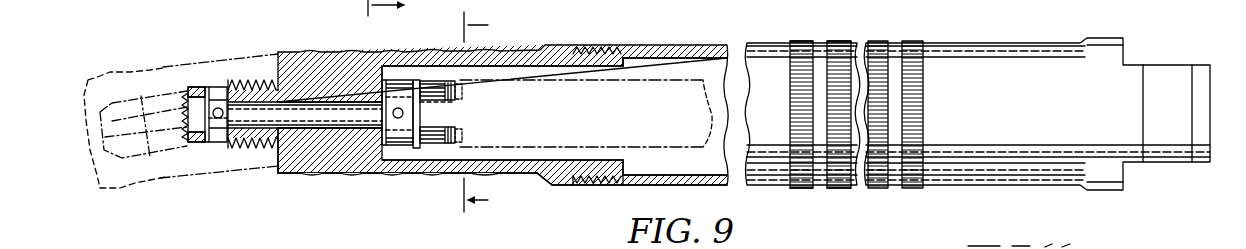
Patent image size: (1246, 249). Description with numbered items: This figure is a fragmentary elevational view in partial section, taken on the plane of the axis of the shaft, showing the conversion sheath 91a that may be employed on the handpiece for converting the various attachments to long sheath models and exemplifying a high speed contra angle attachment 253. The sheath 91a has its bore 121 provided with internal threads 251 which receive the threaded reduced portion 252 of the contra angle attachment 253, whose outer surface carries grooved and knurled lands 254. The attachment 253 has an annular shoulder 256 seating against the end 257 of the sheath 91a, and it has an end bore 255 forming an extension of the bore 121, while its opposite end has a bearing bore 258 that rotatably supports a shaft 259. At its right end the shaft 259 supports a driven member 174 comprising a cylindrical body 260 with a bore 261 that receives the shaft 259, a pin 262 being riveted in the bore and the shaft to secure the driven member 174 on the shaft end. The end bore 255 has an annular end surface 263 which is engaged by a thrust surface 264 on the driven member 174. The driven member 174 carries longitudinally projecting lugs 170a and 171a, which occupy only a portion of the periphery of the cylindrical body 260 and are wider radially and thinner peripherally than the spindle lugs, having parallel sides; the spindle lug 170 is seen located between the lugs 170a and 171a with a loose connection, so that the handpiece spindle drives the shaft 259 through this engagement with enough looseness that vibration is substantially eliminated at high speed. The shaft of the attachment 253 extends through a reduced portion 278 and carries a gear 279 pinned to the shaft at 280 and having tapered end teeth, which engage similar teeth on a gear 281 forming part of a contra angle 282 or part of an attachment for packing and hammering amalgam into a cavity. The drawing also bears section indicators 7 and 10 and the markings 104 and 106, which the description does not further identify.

The section line 7 is at (397, 8).
The section line 10 is at (490, 113).
The sheath 91a is at (975, 58).
The member 104 is at (319, 5).
The member 106 is at (323, 12).
The bore 121 is at (678, 55).
The longitudinal driving extension 170 is at (462, 104).
The lug 170a is at (458, 90).
The lug 171a is at (452, 135).
The driven member 174 is at (402, 92).
The internal threads 251 is at (600, 54).
The threaded reduced portion 252 is at (593, 178).
The contra angle attachment 253 is at (428, 178).
The grooved and knurled lands 254 is at (337, 177).
The end bore 255 is at (552, 160).
The annular shoulder 256 is at (578, 52).
The end 257 is at (566, 180).
The bearing bore 258 is at (330, 118).
The shaft 259 is at (307, 108).
The cylindrical body 260 is at (401, 148).
The bore 261 is at (385, 142).
The rod end 262 is at (392, 117).
The annular end surface 263 is at (395, 78).
The thrust surface 264 is at (382, 88).
The reduced portion 278 is at (248, 80).
The gear 279 is at (218, 142).
The pin location 280 is at (218, 107).
The gear 281 is at (152, 98).
The contra angle 282 is at (130, 194).